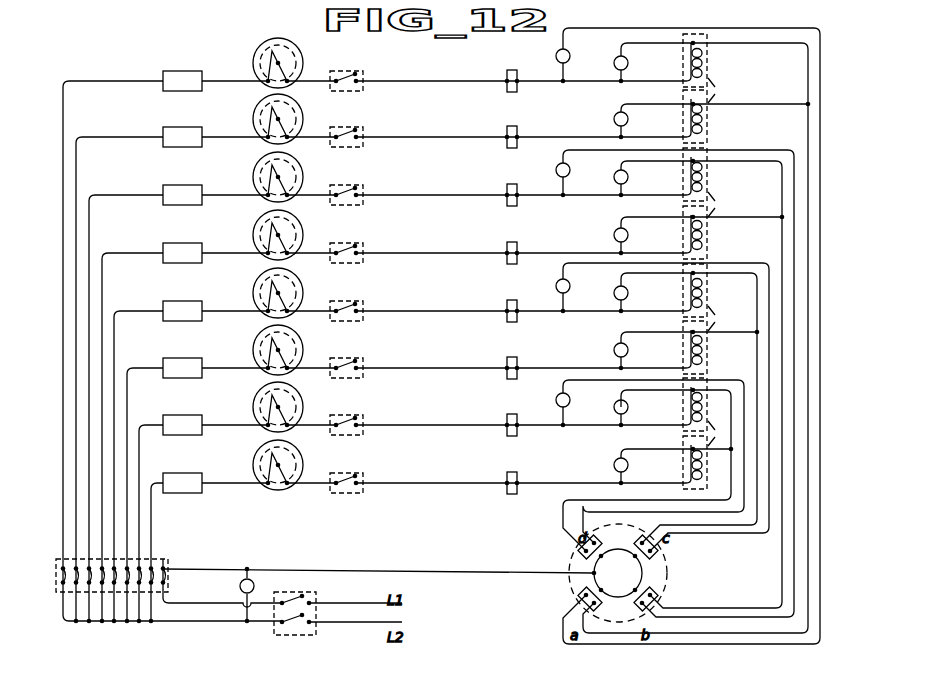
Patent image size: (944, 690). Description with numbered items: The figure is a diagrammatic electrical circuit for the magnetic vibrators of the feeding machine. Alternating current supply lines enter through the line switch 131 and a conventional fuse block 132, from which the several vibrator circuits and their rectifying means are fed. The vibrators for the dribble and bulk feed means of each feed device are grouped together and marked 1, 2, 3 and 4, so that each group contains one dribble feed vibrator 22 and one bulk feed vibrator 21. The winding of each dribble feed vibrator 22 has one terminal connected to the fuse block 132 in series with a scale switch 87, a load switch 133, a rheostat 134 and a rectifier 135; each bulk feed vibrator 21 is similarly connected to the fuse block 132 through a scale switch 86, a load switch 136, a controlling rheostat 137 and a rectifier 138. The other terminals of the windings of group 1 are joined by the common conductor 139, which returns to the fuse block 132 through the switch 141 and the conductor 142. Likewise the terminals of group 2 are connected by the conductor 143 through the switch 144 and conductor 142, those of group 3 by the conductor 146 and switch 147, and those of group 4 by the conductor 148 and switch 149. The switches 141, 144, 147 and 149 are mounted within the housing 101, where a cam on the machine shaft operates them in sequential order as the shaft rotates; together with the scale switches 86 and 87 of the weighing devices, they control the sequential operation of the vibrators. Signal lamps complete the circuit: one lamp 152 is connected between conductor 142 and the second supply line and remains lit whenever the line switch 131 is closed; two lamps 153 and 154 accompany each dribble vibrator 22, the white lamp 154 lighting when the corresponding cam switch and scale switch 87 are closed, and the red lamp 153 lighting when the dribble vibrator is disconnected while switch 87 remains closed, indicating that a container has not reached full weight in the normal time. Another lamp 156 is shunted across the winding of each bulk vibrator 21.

The rectifier 135 is at (192, 62).
The rheostat 134 is at (254, 57).
The load switch 133 is at (353, 70).
The scale switch 87 is at (512, 69).
The signal lamp 153 is at (570, 53).
The signal lamp 154 is at (614, 63).
The dribble feed vibrator 22 is at (682, 64).
The rectifier 138 is at (192, 120).
The controlling rheostat 137 is at (254, 117).
The load switch 136 is at (353, 127).
The scale switch 86 is at (512, 126).
The signal lamp 156 is at (614, 120).
The bulk feed vibrator 21 is at (682, 122).
The vibrator group 1 is at (717, 90).
The vibrator group 2 is at (717, 204).
The vibrator group 3 is at (717, 318).
The vibrator group 4 is at (717, 433).
The common conductor 139 is at (820, 140).
The conductor 143 is at (783, 254).
The conductor 146 is at (757, 406).
The conductor 148 is at (733, 481).
The fuse block 132 is at (163, 558).
The signal lamp 152 is at (239, 587).
The line switch 131 is at (316, 599).
The conductor 142 is at (446, 570).
The switch 149 is at (579, 548).
The switch 147 is at (657, 549).
The switch 141 is at (579, 600).
The switch 144 is at (657, 600).
The housing 101 is at (675, 576).